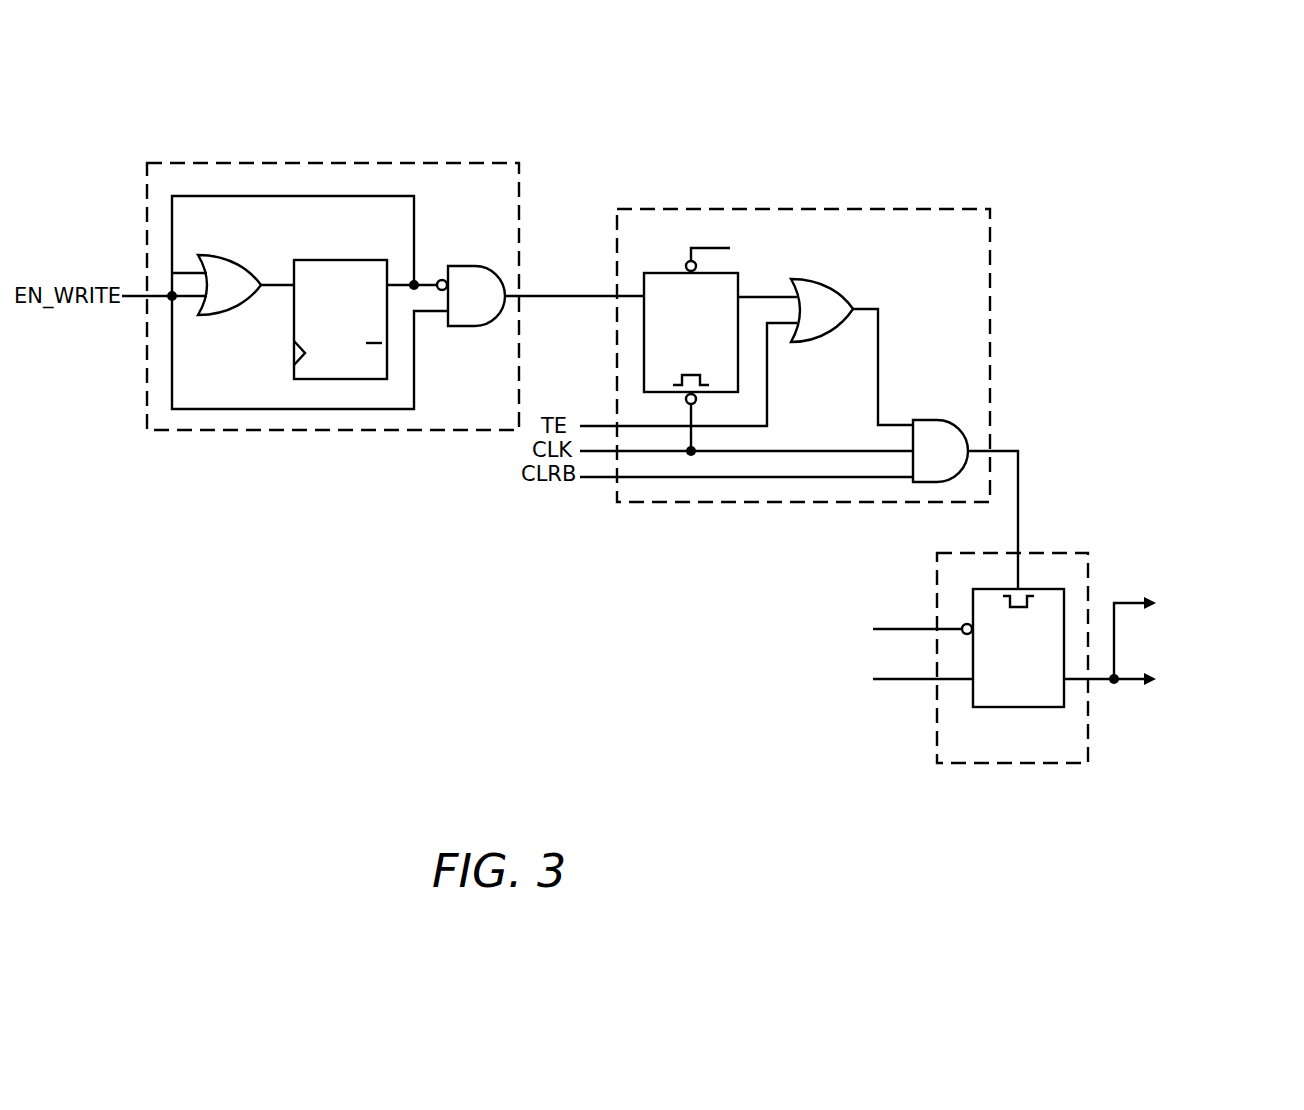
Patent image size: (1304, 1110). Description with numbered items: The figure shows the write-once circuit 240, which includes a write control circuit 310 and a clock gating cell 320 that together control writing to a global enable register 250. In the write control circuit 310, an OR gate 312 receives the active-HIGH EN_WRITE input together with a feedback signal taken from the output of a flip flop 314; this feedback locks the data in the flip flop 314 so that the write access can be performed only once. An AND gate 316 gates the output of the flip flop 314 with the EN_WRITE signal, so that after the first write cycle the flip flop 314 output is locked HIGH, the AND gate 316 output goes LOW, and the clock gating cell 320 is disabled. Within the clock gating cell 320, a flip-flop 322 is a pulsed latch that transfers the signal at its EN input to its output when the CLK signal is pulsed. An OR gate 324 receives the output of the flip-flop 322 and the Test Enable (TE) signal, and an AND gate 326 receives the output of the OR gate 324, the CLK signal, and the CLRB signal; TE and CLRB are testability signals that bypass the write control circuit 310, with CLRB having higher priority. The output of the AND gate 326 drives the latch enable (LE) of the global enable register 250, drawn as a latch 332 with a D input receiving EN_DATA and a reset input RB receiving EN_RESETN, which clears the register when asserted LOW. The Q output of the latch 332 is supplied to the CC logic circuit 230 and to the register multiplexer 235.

The write-once circuit 240 is at (1116, 70).
The write control circuit 310 is at (486, 170).
The OR gate 312 is at (241, 273).
The flip flop 314 is at (313, 263).
The AND gate 316 is at (487, 275).
The clock gating cell 320 is at (964, 215).
The flip-flop 322 is at (665, 276).
The OR gate 324 is at (840, 302).
The AND gate 326 is at (950, 428).
The latch 332 is at (1020, 707).
The global enable register 250 is at (951, 763).
The CC logic circuit 230 is at (1219, 604).
The register multiplexer 235 is at (1213, 679).